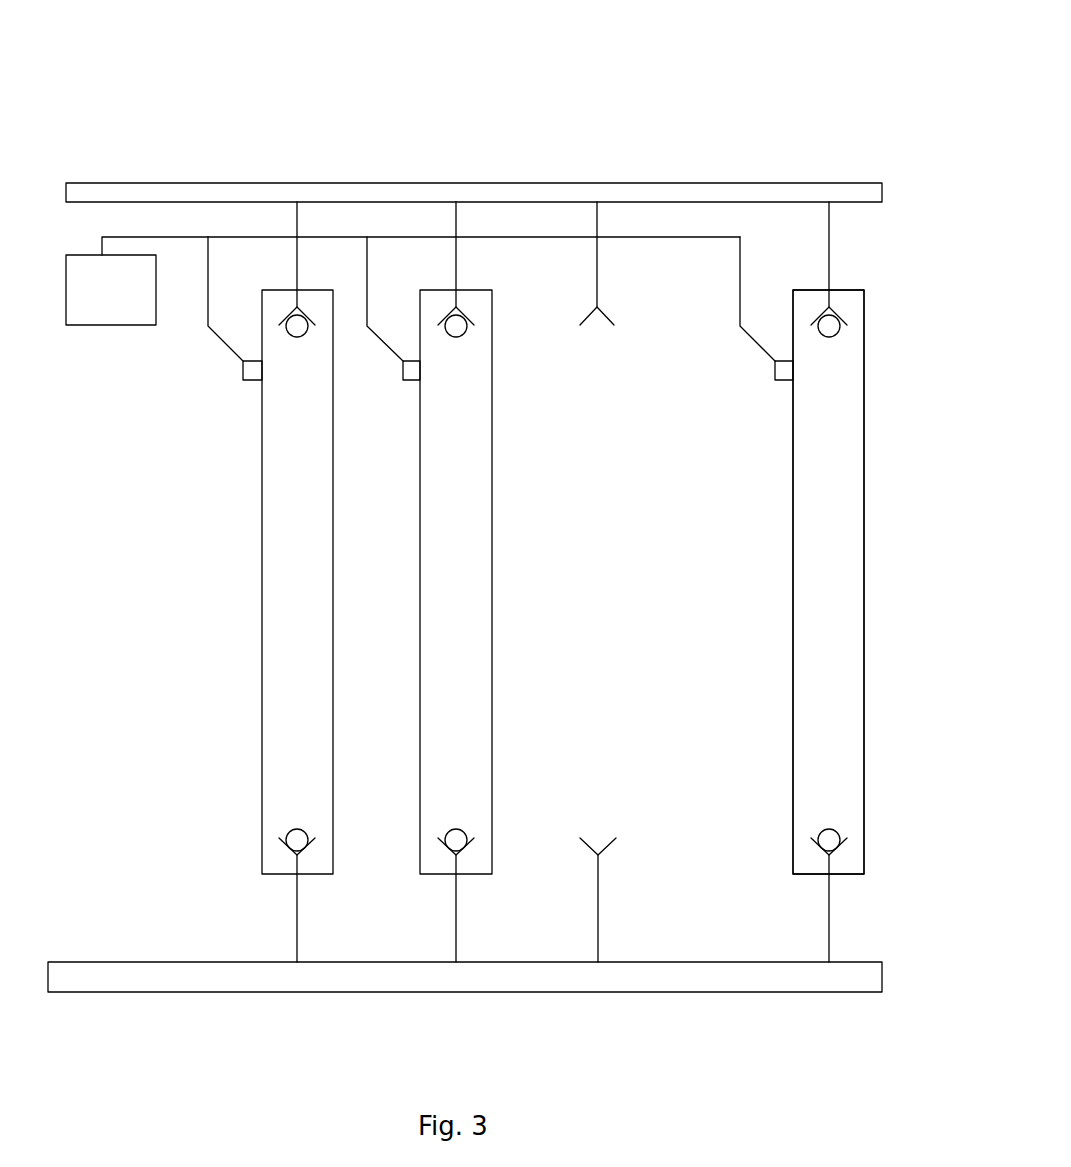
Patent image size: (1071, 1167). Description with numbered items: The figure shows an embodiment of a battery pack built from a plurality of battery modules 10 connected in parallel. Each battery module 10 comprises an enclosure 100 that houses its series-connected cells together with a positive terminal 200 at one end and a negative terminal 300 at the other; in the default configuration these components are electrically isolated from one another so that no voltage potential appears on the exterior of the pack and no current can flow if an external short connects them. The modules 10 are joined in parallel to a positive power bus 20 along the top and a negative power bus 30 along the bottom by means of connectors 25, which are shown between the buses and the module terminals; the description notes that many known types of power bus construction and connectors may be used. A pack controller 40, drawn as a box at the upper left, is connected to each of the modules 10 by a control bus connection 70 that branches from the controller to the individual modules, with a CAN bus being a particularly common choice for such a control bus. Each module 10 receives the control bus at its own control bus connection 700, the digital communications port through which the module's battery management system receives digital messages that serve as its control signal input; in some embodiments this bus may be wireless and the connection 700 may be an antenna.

The battery module 10 is at (262, 667).
The positive power bus 20 is at (690, 183).
The connectors 25 is at (603, 318).
The negative power bus 30 is at (215, 992).
The pack controller 40 is at (108, 302).
The control bus connection 70 is at (253, 237).
The enclosure 100 is at (855, 566).
The positive terminal 200 is at (838, 335).
The negative terminal 300 is at (836, 832).
The control bus connection 700 is at (247, 380).